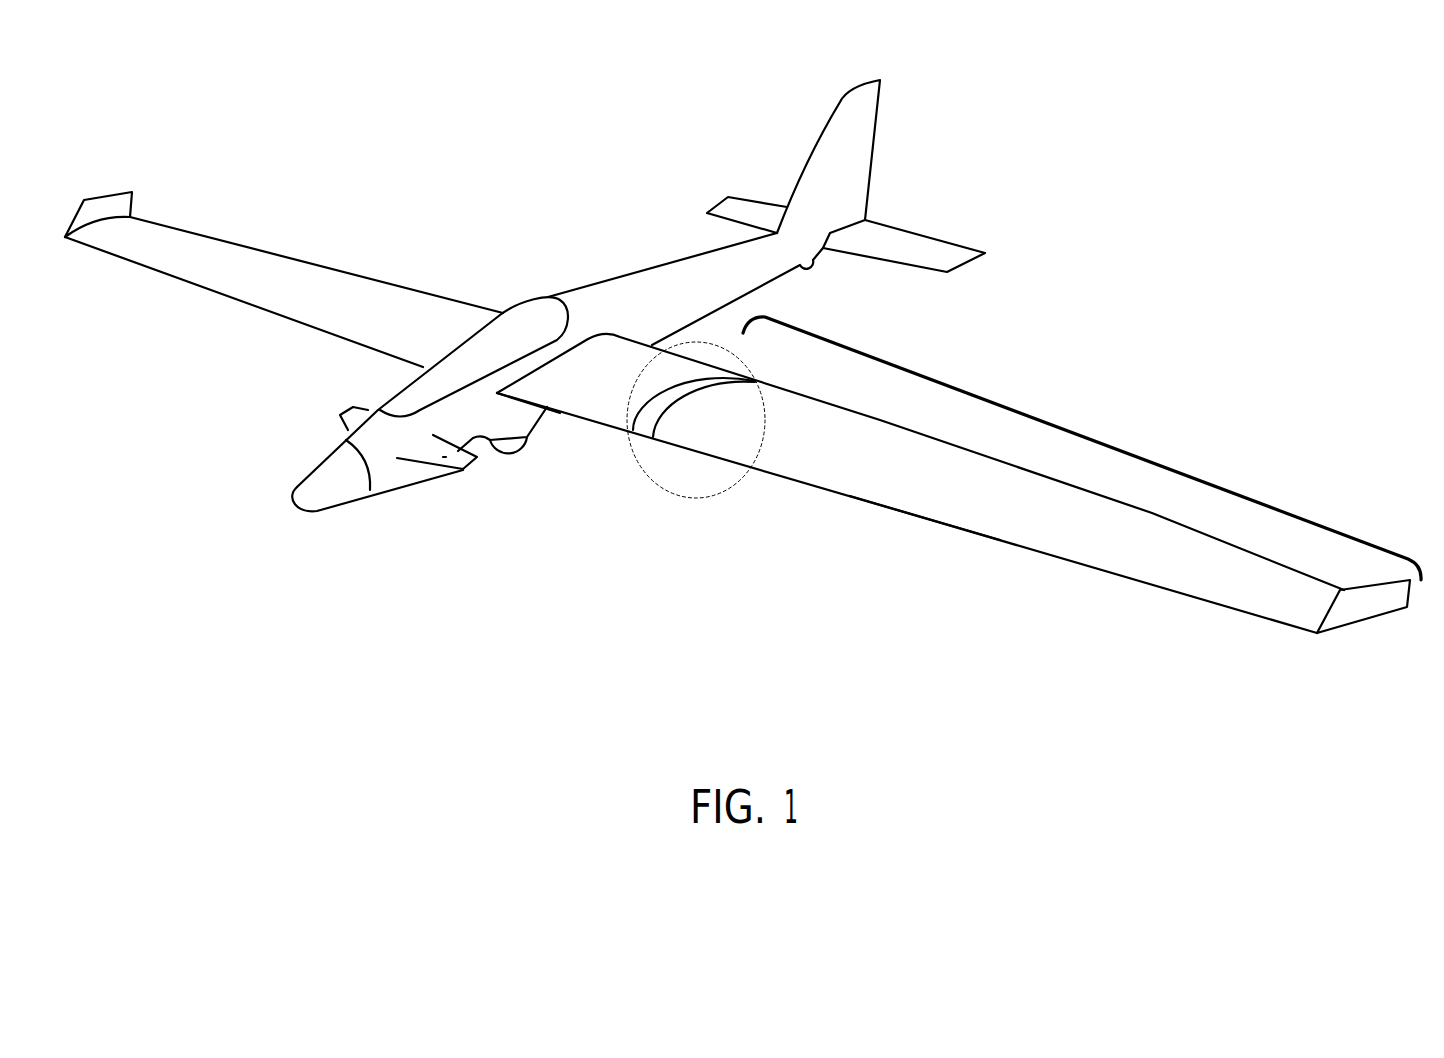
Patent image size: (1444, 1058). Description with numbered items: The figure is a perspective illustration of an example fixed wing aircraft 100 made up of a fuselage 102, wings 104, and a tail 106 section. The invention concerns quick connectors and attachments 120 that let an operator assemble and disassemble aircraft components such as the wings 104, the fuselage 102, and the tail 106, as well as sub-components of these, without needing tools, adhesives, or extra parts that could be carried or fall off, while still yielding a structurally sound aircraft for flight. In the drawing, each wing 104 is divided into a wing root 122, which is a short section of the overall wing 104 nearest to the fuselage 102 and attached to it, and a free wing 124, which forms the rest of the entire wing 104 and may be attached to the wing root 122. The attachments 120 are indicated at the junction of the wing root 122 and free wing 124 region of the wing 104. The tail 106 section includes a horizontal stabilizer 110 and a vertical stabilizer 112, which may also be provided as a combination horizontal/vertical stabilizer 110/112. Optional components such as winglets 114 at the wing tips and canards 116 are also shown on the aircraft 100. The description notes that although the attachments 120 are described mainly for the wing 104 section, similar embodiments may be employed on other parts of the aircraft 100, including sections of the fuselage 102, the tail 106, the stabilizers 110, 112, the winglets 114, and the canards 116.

The fixed wing aircraft 100 is at (153, 608).
The fuselage 102 is at (578, 365).
The wings 104 is at (1113, 439).
The tail 106 is at (888, 53).
The horizontal stabilizer 110 is at (712, 210).
The vertical stabilizer 112 is at (838, 128).
The winglets 114 is at (85, 199).
The canards 116 is at (340, 425).
The attachments 120 is at (685, 498).
The wing root 122 is at (549, 387).
The free wing 124 is at (925, 491).